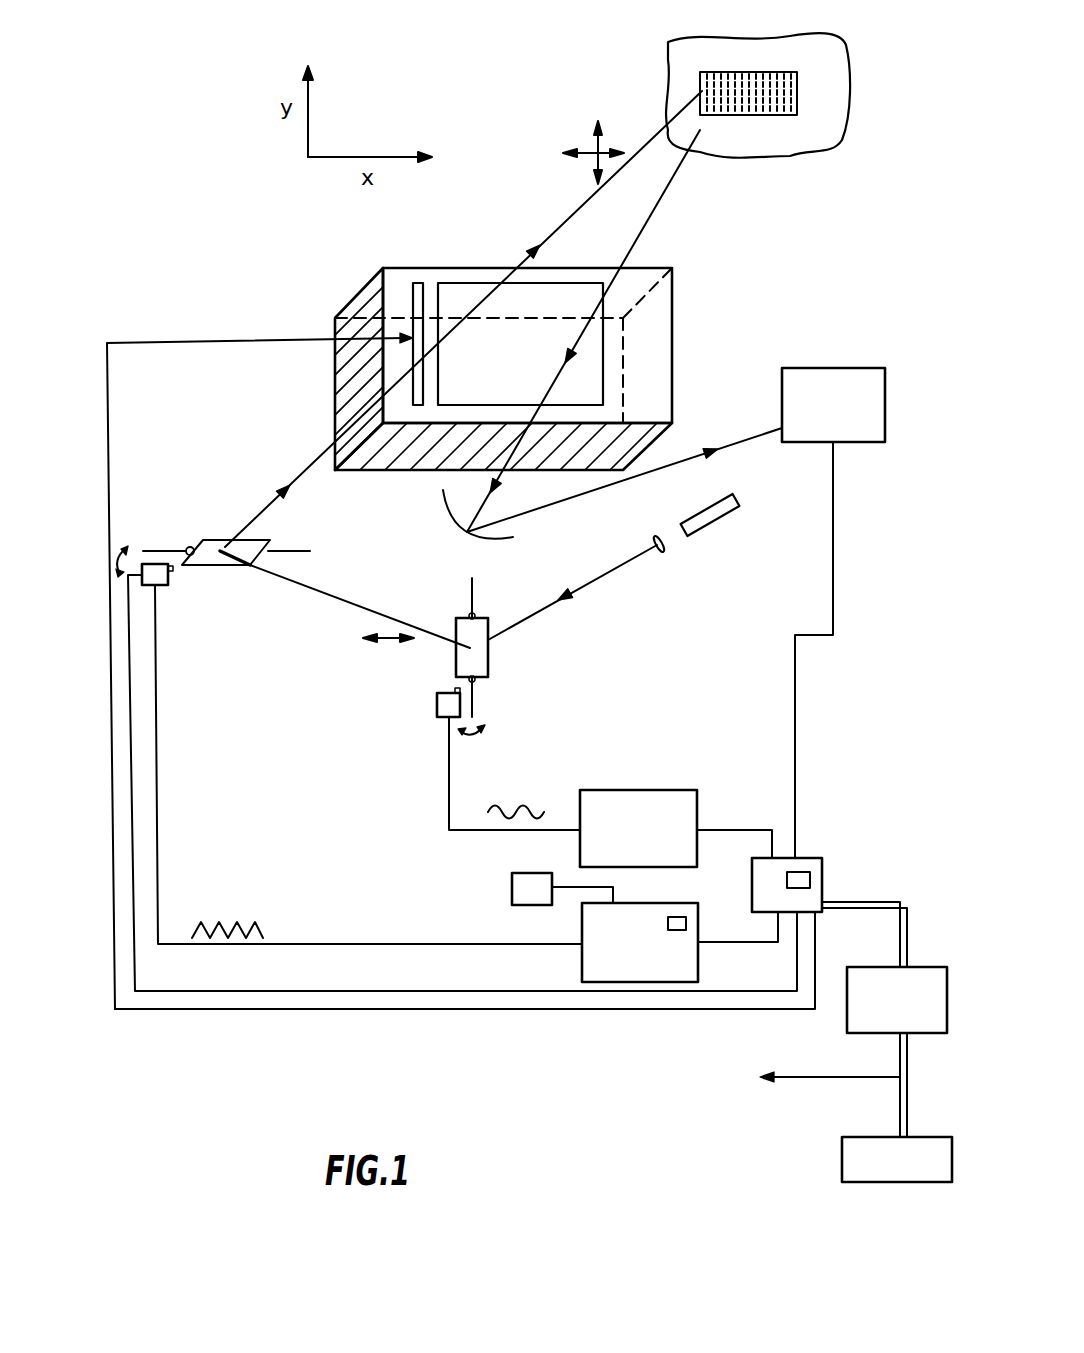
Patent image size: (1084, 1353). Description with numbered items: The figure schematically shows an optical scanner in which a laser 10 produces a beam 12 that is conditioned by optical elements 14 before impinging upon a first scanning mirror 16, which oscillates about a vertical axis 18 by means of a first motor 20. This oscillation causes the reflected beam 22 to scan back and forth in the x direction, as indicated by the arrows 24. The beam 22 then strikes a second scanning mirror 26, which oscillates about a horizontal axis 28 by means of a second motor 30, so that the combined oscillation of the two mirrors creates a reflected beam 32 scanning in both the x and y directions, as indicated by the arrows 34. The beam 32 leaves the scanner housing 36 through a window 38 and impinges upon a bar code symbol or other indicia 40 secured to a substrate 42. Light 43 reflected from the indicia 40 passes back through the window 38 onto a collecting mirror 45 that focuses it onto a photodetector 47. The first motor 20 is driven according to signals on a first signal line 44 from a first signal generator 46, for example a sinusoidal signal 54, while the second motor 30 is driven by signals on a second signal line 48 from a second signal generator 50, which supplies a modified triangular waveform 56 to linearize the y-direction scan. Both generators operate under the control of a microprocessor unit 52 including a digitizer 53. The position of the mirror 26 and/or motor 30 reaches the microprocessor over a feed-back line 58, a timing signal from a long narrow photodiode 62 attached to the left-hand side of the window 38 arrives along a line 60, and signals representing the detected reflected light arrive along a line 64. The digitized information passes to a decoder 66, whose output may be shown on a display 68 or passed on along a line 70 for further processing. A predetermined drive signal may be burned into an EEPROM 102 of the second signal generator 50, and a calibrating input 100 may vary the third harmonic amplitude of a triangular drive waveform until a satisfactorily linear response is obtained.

The laser 10 is at (720, 512).
The beam 12 is at (606, 575).
The optical elements 14 is at (663, 552).
The first scanning mirror 16 is at (490, 660).
The vertical axis 18 is at (475, 592).
The first motor 20 is at (437, 708).
The reflected beam 22 is at (325, 600).
The arrows 24 is at (388, 641).
The second scanning mirror 26 is at (244, 567).
The horizontal axis 28 is at (300, 541).
The second motor 30 is at (168, 583).
The reflected beam 32 is at (558, 222).
The arrows 34 is at (598, 140).
The housing 36 is at (343, 362).
The window 38 is at (563, 287).
The indicia 40 is at (797, 88).
The substrate 42 is at (840, 34).
The reflected light 43 is at (680, 170).
The first signal line 44 is at (455, 802).
The collecting mirror 45 is at (443, 508).
The first signal generator 46 is at (628, 791).
The photodetector 47 is at (893, 403).
The second signal line 48 is at (343, 942).
The second signal generator 50 is at (650, 903).
The microprocessor unit 52 is at (822, 883).
The digitizer 53 is at (820, 866).
The sinusoidal signal 54 is at (540, 804).
The modified triangular waveform 56 is at (205, 923).
The feed-back line 58 is at (355, 993).
The line 60 is at (478, 1011).
The photodiode 62 is at (421, 305).
The line 64 is at (835, 582).
The decoder 66 is at (846, 1001).
The display 68 is at (893, 1183).
The line 70 is at (820, 1082).
The calibrating input 100 is at (503, 855).
The EEPROM 102 is at (688, 922).